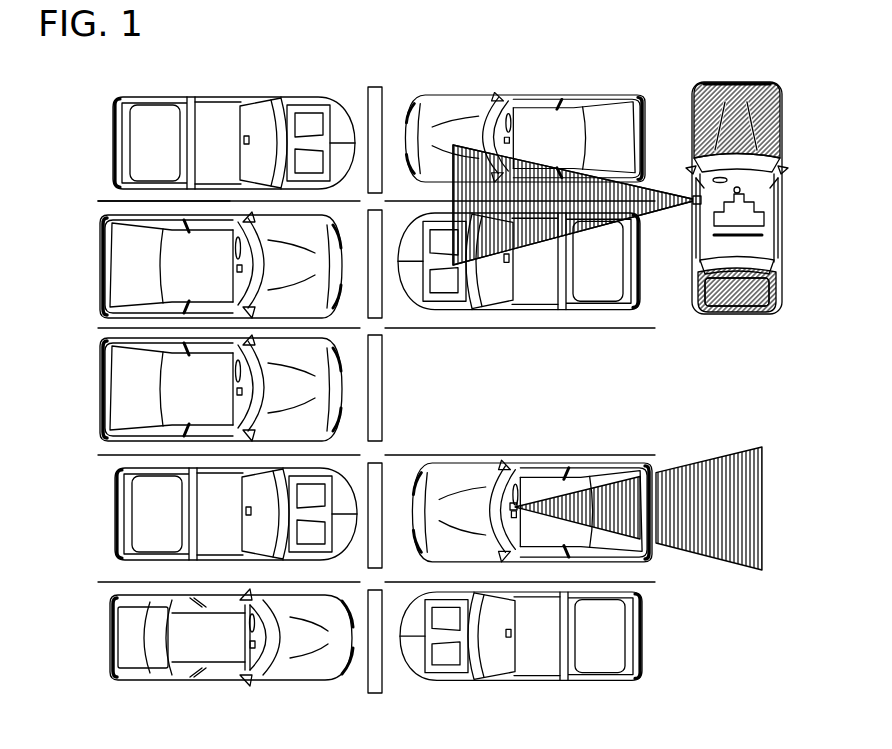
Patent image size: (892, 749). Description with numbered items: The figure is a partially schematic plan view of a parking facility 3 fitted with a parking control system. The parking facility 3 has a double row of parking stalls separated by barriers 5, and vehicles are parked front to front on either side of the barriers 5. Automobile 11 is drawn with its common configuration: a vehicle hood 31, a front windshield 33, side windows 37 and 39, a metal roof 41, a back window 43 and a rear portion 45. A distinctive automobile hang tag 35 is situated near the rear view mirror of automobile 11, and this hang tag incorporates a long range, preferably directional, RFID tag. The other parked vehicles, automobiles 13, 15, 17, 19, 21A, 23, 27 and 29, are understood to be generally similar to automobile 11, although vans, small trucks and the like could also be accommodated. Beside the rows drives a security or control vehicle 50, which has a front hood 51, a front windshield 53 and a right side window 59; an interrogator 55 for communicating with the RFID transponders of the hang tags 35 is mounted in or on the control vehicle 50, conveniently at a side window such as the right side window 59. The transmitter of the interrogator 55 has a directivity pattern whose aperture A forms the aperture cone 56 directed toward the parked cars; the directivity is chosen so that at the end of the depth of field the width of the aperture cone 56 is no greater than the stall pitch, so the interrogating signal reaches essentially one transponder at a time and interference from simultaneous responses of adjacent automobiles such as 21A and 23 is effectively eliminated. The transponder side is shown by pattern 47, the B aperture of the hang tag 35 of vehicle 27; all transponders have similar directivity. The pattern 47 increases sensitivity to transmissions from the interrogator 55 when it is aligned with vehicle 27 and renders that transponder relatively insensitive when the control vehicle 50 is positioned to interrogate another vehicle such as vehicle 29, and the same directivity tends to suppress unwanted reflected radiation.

The parking facility 3 is at (688, 385).
The barriers 5 is at (383, 108).
The automobile 11 is at (98, 172).
The automobile 13 is at (90, 298).
The automobile 15 is at (88, 418).
The automobile 17 is at (100, 543).
The automobile 19 is at (100, 663).
The automobile 21A is at (621, 86).
The automobile 23 is at (652, 316).
The automobile 27 is at (670, 570).
The automobile 29 is at (658, 687).
The vehicle hood 31 is at (308, 100).
The front windshield 33 is at (272, 120).
The automobile hang tag 35 is at (252, 132).
The side window 37 is at (207, 100).
The side window 39 is at (230, 188).
The metal roof 41 is at (167, 188).
The back window 43 is at (157, 118).
The rear portion 45 is at (108, 143).
The directivity pattern 47 is at (700, 472).
The control vehicle 50 is at (722, 66).
The front hood 51 is at (778, 90).
The front windshield 53 is at (780, 176).
The interrogator 55 is at (656, 170).
The aperture cone 56 is at (569, 224).
The right side window 59 is at (772, 193).
The aperture of interrogator signal A is at (672, 228).
The aperture of transponder signal B is at (535, 538).